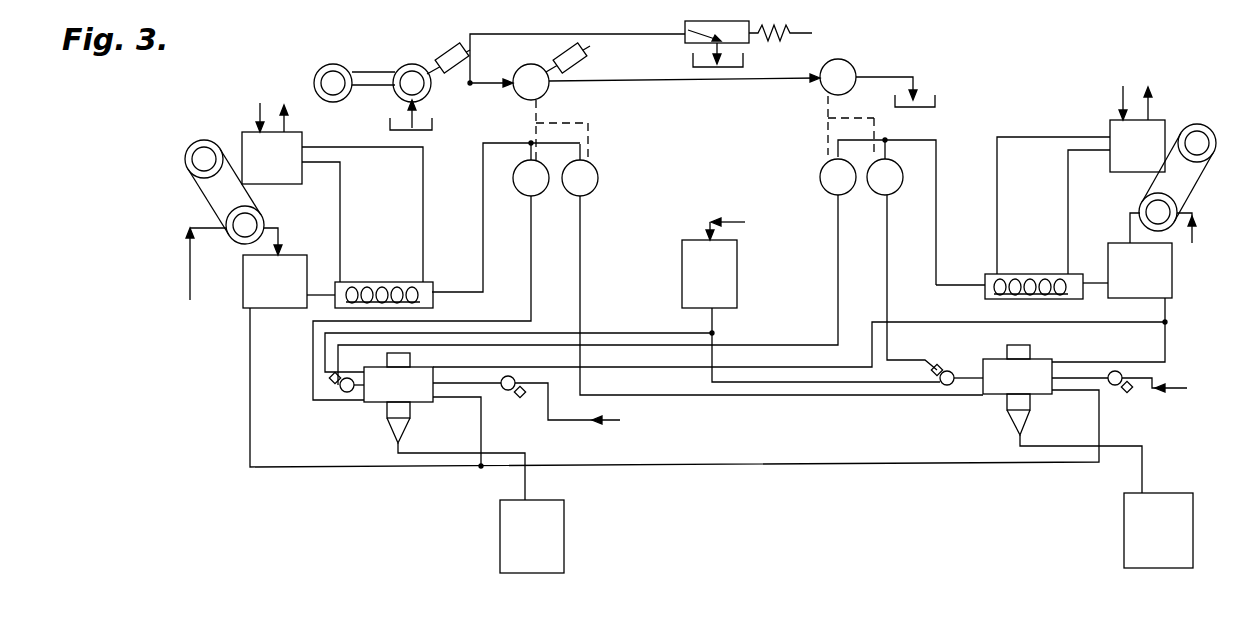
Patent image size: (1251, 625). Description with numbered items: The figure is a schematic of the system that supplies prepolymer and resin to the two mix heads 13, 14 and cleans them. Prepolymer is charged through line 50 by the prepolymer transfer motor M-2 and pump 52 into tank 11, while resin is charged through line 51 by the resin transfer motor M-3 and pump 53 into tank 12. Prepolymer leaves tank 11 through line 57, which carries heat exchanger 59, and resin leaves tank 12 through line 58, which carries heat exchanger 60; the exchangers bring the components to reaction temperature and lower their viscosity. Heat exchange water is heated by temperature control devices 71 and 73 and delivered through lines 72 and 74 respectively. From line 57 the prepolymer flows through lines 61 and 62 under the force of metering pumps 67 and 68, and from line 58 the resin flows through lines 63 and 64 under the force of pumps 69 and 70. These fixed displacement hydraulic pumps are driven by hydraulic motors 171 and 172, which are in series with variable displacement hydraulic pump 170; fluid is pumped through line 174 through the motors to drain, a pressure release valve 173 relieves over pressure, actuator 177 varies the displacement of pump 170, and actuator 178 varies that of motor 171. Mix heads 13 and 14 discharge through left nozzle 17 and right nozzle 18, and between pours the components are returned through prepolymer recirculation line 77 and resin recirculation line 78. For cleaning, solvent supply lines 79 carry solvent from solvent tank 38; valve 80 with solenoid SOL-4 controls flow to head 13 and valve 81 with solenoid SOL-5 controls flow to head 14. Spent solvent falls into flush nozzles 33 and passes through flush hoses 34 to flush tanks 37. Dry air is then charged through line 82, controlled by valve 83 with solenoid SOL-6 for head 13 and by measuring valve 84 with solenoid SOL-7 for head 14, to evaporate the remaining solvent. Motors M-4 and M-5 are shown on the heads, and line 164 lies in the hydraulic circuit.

The variable displacement hydraulic pump 170 is at (406, 64).
The actuator 177 is at (445, 50).
The actuator 178 is at (585, 58).
The variable displacement hydraulic motor 171 is at (549, 88).
The pressure release valve 173 is at (745, 42).
The line 164 is at (705, 82).
The variable displacement hydraulic motor 172 is at (848, 62).
The line 174 is at (915, 80).
The line 62 is at (858, 140).
The line 61 is at (889, 143).
The line 57 is at (938, 196).
The metering pump 68 is at (820, 178).
The metering pump 67 is at (879, 192).
The pump 69 is at (598, 178).
The pump 70 is at (522, 192).
The temperature control device 71 is at (1110, 128).
The line 72 is at (1068, 182).
The heat exchanger 59 is at (1035, 274).
The tank 11 is at (1122, 242).
The prepolymer transfer pump 52 is at (1185, 161).
The prepolymer transfer motor M-2 is at (1184, 128).
The line 50 is at (1196, 244).
The temperature control device 73 is at (290, 184).
The line 74 is at (423, 198).
The resin transfer pump 53 is at (196, 198).
The resin transfer motor M-3 is at (190, 145).
The line 51 is at (182, 252).
The tank 12 is at (270, 308).
The line 58 is at (318, 286).
The heat exchanger 60 is at (382, 282).
The line 64 is at (531, 272).
The line 63 is at (582, 218).
The solvent tank 38 is at (737, 272).
The solvent supply line 79 is at (628, 333).
The prepolymer recirculation line 77 is at (627, 368).
The resin component recirculation line 78 is at (250, 384).
The mix head 14 is at (422, 405).
The motor M-5 is at (405, 360).
The solvent supply valve 81 is at (311, 398).
The solenoid SOL-5 is at (345, 392).
The measuring valve 84 is at (496, 408).
The solenoid SOL-7 is at (520, 396).
The line 82 is at (576, 422).
The right nozzle 18 is at (410, 418).
The flush nozzle 33 is at (392, 432).
The flush hose 34 is at (525, 486).
The flush tank 37 is at (564, 538).
The mix head 13 is at (1012, 373).
The motor M-4 is at (1020, 352).
The left nozzle 17 is at (1030, 404).
The solvent supply valve 80 is at (946, 387).
The solenoid SOL-4 is at (918, 366).
The valve 83 is at (1119, 401).
The solenoid SOL-6 is at (1130, 392).